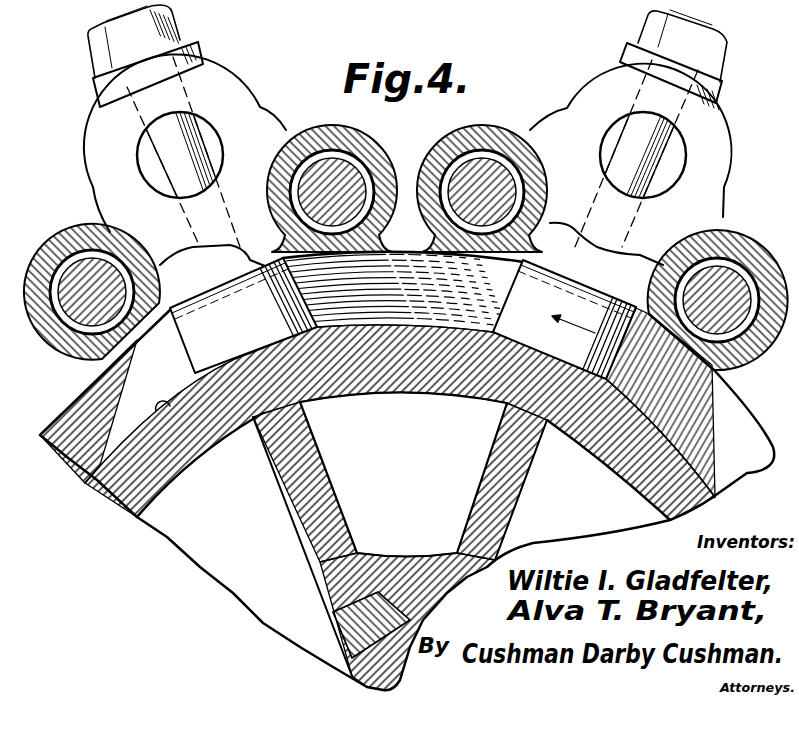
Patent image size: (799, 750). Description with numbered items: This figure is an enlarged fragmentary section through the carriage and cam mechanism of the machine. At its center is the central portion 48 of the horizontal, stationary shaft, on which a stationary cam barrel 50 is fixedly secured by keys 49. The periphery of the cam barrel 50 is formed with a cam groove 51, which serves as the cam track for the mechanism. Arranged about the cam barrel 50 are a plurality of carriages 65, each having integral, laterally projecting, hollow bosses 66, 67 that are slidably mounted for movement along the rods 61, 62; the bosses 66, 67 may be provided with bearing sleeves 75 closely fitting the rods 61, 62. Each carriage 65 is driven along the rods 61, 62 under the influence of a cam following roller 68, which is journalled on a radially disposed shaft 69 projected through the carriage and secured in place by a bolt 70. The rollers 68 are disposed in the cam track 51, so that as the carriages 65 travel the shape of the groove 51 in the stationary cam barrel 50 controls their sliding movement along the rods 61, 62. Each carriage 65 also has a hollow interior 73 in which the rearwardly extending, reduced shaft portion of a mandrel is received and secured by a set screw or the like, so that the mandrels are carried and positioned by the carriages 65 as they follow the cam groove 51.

The central portion 48 is at (393, 617).
The keys 49 is at (353, 610).
The stationary cam barrel 50 is at (463, 390).
The cam groove 51 is at (172, 410).
The rod 61 is at (86, 272).
The rod 62 is at (323, 170).
The carriages 65 is at (220, 88).
The hollow boss 66 is at (77, 340).
The hollow boss 67 is at (367, 153).
The cam following rollers 68 is at (203, 352).
The radially disposed shafts 69 is at (170, 148).
The bolts 70 is at (105, 53).
The hollow interiors 73 is at (215, 135).
The bearing sleeves 75 is at (86, 262).